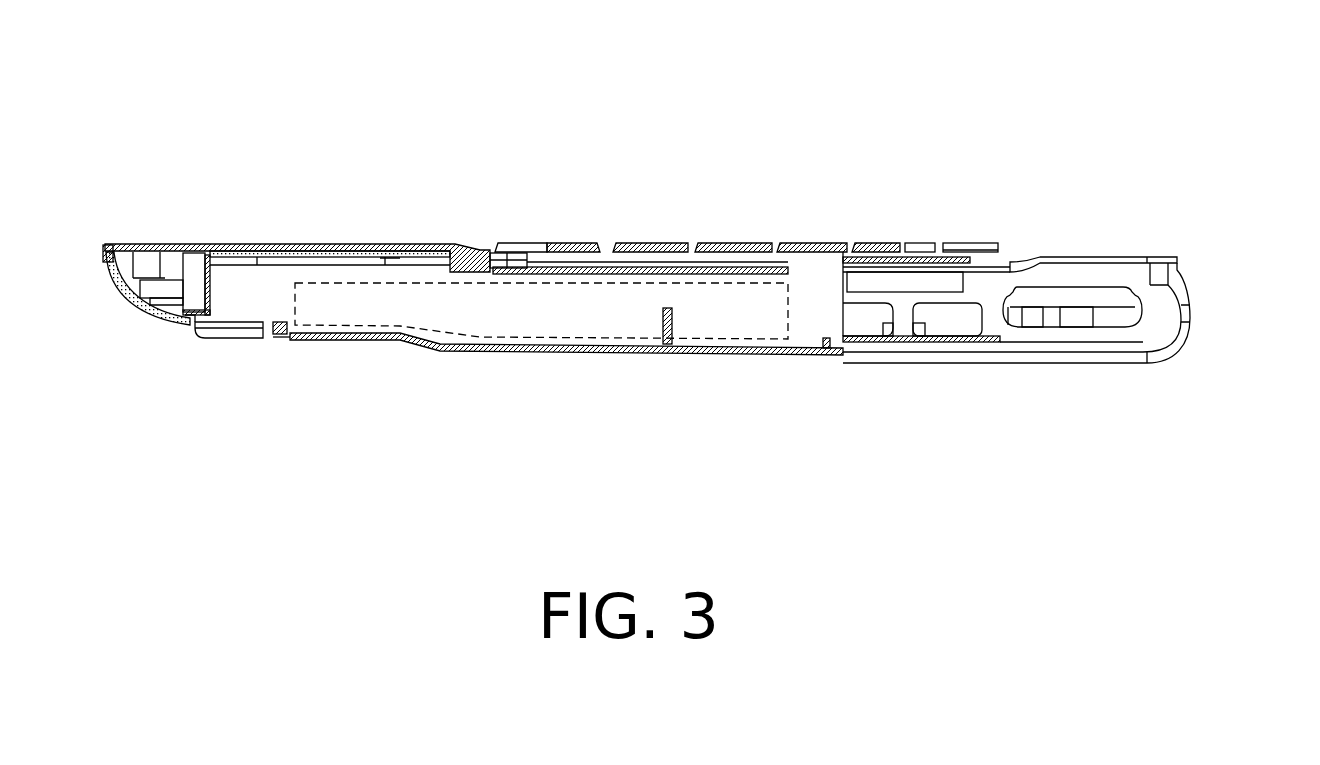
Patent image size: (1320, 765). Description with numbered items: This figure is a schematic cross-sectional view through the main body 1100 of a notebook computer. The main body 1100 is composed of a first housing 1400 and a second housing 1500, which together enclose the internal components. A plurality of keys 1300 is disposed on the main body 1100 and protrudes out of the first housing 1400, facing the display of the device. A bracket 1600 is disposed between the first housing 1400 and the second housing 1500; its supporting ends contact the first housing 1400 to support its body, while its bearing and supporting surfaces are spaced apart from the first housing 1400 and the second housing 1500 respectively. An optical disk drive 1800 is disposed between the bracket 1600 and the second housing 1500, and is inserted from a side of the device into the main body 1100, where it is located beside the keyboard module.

The main body 1100 is at (413, 82).
The keys 1300 is at (566, 243).
The first housing 1400 is at (340, 243).
The second housing 1500 is at (304, 243).
The bracket 1600 is at (737, 268).
The optical disk drive 1800 is at (733, 328).